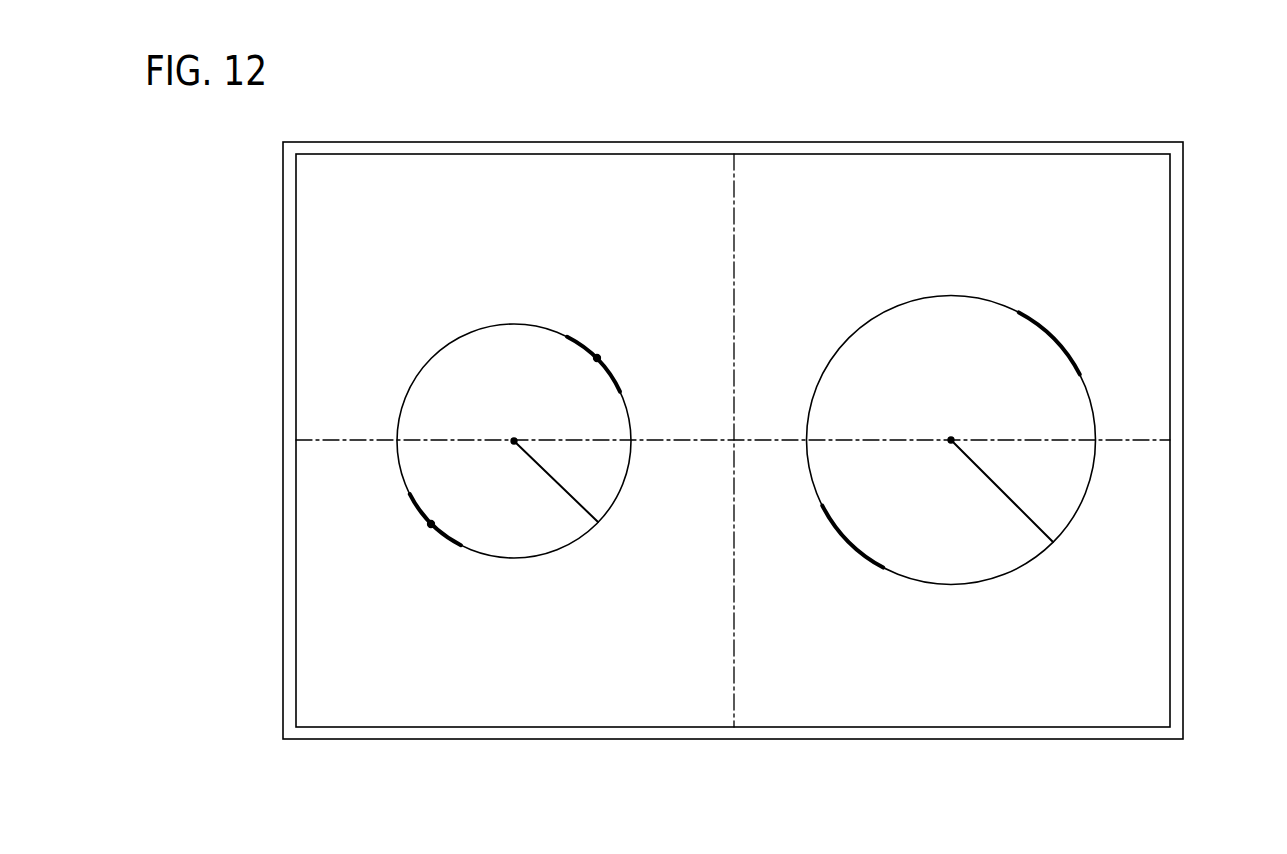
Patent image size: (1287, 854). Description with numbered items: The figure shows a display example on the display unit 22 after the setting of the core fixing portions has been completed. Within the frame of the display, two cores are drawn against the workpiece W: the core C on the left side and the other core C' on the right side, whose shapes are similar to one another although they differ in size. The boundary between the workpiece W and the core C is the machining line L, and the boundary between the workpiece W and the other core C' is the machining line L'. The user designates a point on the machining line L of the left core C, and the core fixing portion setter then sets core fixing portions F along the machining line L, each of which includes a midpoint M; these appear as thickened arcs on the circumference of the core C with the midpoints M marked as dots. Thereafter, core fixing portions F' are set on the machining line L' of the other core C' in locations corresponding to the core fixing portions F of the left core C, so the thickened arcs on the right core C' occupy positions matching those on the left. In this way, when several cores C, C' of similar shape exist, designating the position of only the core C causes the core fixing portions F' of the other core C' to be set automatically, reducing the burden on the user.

The display unit 22 is at (1183, 273).
The workpiece W is at (1140, 535).
The core C is at (514, 399).
The machining line L is at (514, 417).
The midpoint M is at (598, 357).
The core fixing portion F is at (516, 441).
The other core C' is at (950, 393).
The machining line L' is at (951, 415).
The core fixing portion F' is at (951, 439).